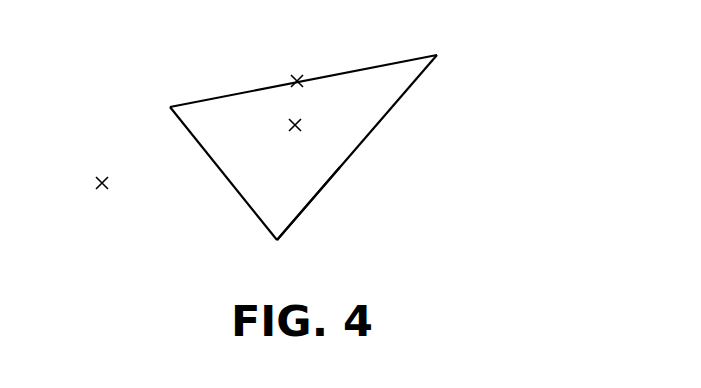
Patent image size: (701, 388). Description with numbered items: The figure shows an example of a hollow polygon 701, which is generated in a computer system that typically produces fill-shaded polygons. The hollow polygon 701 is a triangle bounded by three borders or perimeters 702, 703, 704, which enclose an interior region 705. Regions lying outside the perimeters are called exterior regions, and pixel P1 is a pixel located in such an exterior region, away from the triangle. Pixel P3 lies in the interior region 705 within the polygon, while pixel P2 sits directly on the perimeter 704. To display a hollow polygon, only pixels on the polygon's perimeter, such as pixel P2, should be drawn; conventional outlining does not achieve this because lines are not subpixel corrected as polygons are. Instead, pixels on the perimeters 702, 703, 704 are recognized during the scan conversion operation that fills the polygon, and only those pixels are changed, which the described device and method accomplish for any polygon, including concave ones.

The hollow polygon 701 is at (336, 136).
The perimeter 702 is at (307, 208).
The perimeter 703 is at (247, 208).
The perimeter 704 is at (412, 59).
The interior region 705 is at (330, 154).
The pixel P1 is at (113, 181).
The pixel P2 is at (299, 73).
The pixel P3 is at (305, 123).